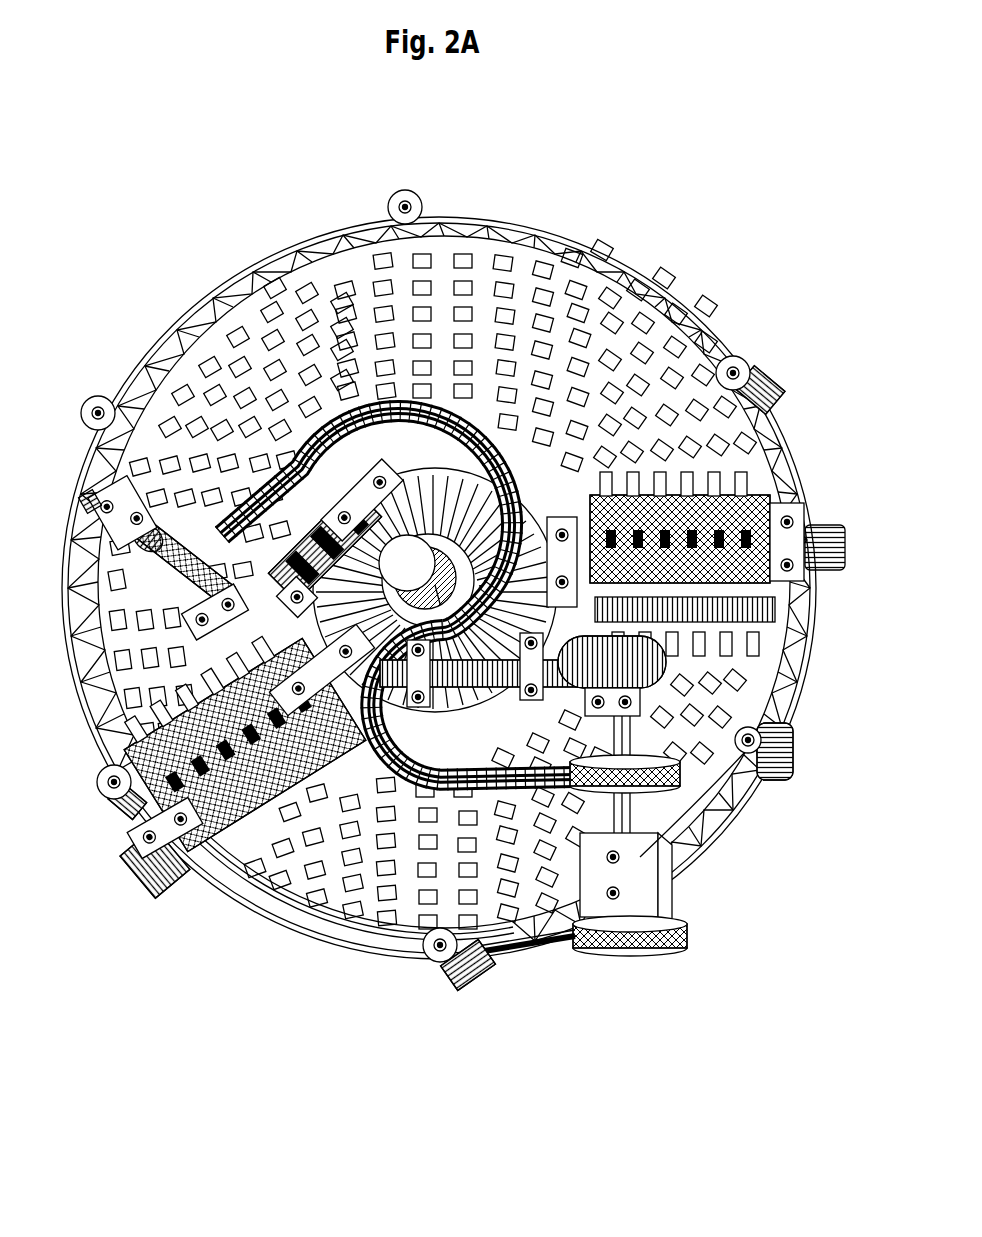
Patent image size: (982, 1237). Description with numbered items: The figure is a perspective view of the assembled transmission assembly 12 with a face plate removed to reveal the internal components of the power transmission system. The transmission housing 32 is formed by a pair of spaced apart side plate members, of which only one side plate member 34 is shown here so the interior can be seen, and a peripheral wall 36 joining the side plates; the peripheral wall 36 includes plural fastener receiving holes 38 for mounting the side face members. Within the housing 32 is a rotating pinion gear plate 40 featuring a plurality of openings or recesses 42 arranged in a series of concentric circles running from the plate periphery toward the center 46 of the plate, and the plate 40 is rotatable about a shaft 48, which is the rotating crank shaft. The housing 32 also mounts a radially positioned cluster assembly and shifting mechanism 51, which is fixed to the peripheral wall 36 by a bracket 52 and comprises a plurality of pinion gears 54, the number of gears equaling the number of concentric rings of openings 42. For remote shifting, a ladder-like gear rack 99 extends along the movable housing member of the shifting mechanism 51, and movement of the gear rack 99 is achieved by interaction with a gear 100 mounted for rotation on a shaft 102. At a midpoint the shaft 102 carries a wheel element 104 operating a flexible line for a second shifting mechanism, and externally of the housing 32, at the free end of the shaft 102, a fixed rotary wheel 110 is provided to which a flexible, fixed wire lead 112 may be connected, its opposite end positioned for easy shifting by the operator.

The gaming wheel assembly 12 is at (768, 285).
The transmission housing 32 is at (302, 940).
The side plate member 34 is at (760, 806).
The peripheral wall 36 is at (100, 775).
The fastener receiving holes 38 is at (100, 396).
The pinion gear plate 40 is at (280, 292).
The openings or recesses 42 is at (375, 275).
The center of the plate 46 is at (540, 420).
The shaft 48 is at (410, 553).
The shifting mechanism 51 is at (570, 677).
The bracket 52 is at (815, 525).
The pinion gears 54 is at (262, 888).
The gear rack 99 is at (455, 760).
The gear 100 is at (700, 622).
The shaft 102 is at (662, 878).
The wheel element 104 is at (690, 785).
The fixed rotary wheel 110 is at (612, 958).
The flexible fixed wire lead 112 is at (540, 960).